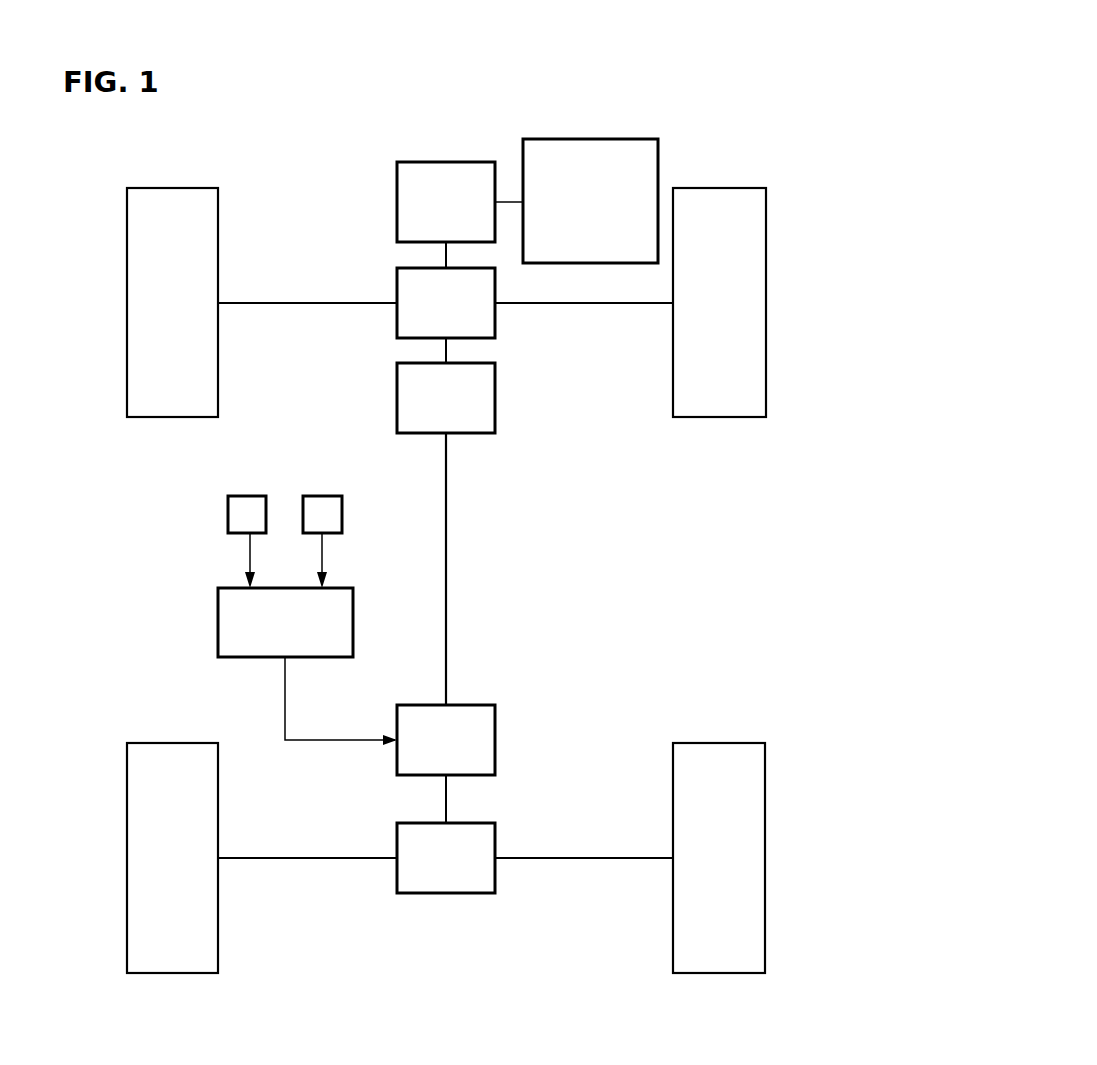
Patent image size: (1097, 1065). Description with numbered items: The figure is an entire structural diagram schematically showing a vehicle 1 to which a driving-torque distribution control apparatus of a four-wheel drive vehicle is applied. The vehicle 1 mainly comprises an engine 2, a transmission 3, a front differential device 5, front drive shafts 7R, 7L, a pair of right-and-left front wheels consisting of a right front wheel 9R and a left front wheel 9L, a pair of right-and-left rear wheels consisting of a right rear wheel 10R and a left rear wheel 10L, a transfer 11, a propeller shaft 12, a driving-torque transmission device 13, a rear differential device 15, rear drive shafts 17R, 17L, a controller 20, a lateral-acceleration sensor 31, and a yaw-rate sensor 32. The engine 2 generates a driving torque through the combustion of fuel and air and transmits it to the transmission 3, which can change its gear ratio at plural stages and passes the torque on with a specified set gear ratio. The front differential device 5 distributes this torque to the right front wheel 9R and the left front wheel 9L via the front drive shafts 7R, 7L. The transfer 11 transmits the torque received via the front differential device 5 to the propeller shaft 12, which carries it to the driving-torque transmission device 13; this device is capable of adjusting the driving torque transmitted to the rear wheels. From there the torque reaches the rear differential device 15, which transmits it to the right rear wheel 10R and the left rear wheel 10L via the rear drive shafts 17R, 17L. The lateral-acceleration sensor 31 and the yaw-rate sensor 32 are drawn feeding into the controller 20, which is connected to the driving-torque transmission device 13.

The vehicle 1 is at (443, 29).
The engine 2 is at (591, 139).
The transmission 3 is at (397, 203).
The front differential device 5 is at (397, 278).
The front drive shaft 7L is at (312, 305).
The front drive shaft 7R is at (578, 305).
The left front wheel 9L is at (127, 303).
The right front wheel 9R is at (766, 302).
The left rear wheel 10L is at (127, 858).
The right rear wheel 10R is at (766, 856).
The transfer 11 is at (495, 398).
The propeller shaft 12 is at (446, 537).
The driving-torque transmission device 13 is at (495, 740).
The rear differential device 15 is at (443, 893).
The rear drive shaft 17L is at (312, 860).
The rear drive shaft 17R is at (578, 860).
The controller 20 is at (218, 620).
The lateral-acceleration sensor 31 is at (228, 512).
The yaw-rate sensor 32 is at (342, 512).